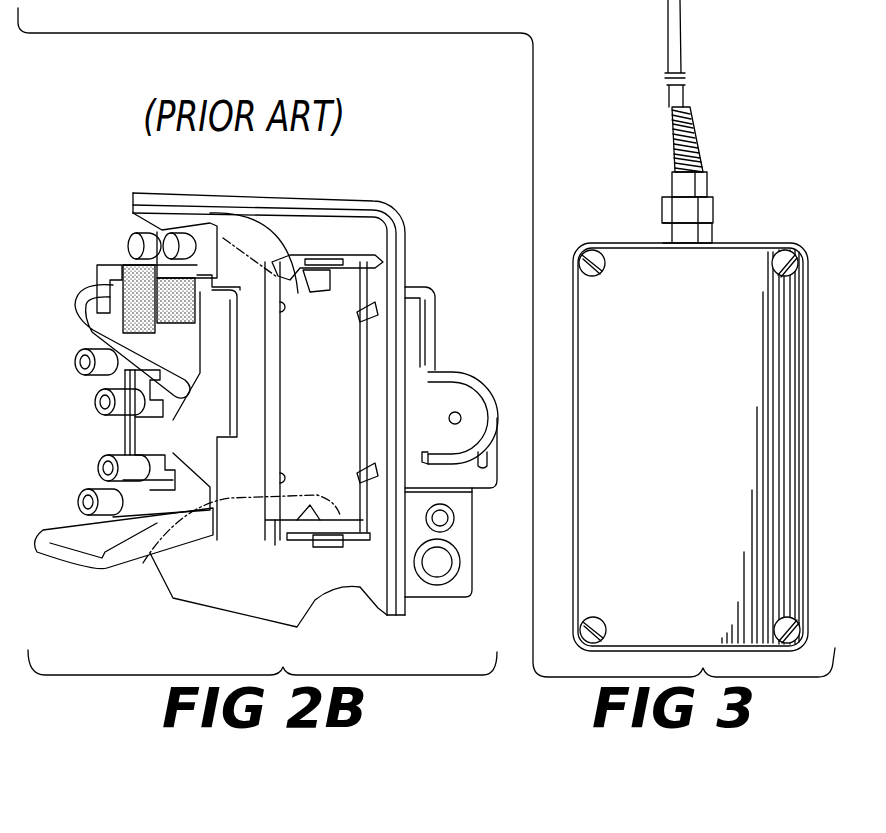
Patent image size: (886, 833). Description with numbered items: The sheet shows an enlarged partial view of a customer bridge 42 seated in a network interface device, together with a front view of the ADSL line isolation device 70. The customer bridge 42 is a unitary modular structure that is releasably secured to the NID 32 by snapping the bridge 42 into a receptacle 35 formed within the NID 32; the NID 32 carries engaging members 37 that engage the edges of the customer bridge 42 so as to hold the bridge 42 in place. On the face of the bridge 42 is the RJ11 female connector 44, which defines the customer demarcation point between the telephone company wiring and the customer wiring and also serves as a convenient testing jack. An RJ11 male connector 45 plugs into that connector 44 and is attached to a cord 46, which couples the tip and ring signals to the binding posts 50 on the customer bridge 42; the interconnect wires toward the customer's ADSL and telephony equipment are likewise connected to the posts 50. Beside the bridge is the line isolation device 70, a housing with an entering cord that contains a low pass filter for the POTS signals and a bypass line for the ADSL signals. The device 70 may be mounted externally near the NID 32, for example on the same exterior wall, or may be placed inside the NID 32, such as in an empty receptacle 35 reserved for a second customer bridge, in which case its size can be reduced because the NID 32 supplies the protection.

In FIG. 2B, the NID 32 is at (295, 200).
In FIG. 2B, the receptacle 35 is at (337, 307).
In FIG. 2B, the engaging members 37 is at (347, 258).
In FIG. 2B, the customer bridge 42 is at (148, 230).
In FIG. 2B, the RJ11 female connector 44 is at (112, 266).
In FIG. 2B, the RJ11 male connector 45 is at (80, 292).
In FIG. 2B, the cord 46 is at (95, 316).
In FIG. 2B, the binding posts 50 is at (95, 406).
In FIG. 3, the ADSL line isolation device 70 is at (735, 243).